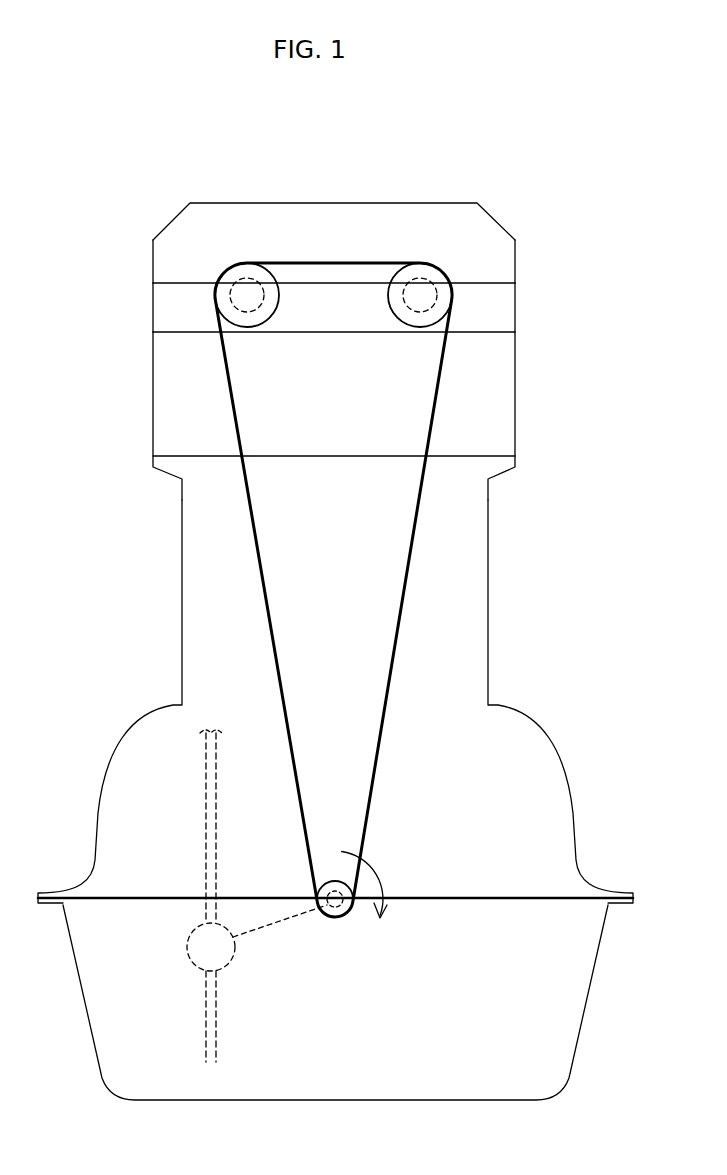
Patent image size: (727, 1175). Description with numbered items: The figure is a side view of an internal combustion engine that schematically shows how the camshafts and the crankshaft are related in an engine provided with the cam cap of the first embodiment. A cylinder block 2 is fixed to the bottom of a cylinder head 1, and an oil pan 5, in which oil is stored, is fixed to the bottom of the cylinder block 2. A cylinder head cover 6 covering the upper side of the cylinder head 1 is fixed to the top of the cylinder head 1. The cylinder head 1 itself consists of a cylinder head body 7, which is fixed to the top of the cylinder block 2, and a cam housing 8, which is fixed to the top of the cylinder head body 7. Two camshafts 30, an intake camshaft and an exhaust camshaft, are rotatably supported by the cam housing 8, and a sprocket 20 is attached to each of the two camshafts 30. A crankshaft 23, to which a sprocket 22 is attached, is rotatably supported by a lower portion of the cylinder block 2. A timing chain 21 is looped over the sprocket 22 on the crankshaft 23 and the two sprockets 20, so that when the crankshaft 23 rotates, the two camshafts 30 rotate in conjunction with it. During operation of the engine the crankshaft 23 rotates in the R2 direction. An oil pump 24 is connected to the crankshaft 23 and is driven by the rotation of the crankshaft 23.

The cylinder head 1 is at (369, 329).
The cylinder block 2 is at (488, 597).
The oil pan 5 is at (588, 979).
The cylinder head cover 6 is at (440, 208).
The cylinder head body 7 is at (352, 416).
The cam housing 8 is at (515, 304).
The sprocket 20 is at (275, 275).
The timing chain 21 is at (393, 662).
The sprocket 22 is at (328, 886).
The crankshaft 23 is at (332, 912).
The oil pump 24 is at (187, 950).
The camshaft 30 is at (247, 312).
The rotation direction of the crankshaft R2 is at (369, 902).